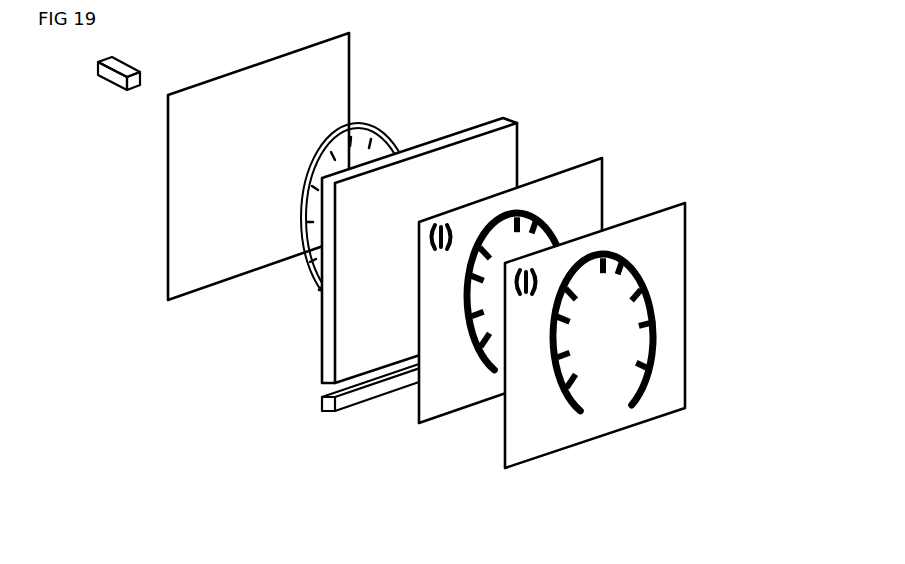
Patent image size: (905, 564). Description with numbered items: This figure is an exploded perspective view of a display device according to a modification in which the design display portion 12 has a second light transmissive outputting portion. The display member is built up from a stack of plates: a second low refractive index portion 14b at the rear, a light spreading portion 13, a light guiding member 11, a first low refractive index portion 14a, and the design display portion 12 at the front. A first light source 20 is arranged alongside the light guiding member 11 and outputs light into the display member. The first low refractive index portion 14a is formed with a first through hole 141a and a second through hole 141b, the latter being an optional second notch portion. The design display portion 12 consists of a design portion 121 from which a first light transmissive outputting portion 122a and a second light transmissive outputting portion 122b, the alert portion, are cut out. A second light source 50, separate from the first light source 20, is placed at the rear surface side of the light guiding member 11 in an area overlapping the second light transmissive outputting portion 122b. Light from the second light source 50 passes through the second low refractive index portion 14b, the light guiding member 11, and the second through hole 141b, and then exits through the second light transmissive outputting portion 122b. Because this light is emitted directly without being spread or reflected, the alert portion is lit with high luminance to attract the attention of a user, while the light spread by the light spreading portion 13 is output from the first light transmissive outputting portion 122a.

The light guiding member 11 is at (502, 163).
The design display portion 12 is at (657, 364).
The light spreading portion 13 is at (404, 130).
The first low refractive index portion 14a is at (583, 192).
The second low refractive index portion 14b is at (187, 210).
The first light source 20 is at (322, 403).
The second light source 50 is at (110, 74).
The design portion 121 is at (658, 267).
The first light transmissive outputting portion 122a is at (658, 338).
The second light transmissive outputting portion 122b is at (531, 302).
The first through hole 141a is at (563, 222).
The second through hole 141b is at (438, 258).